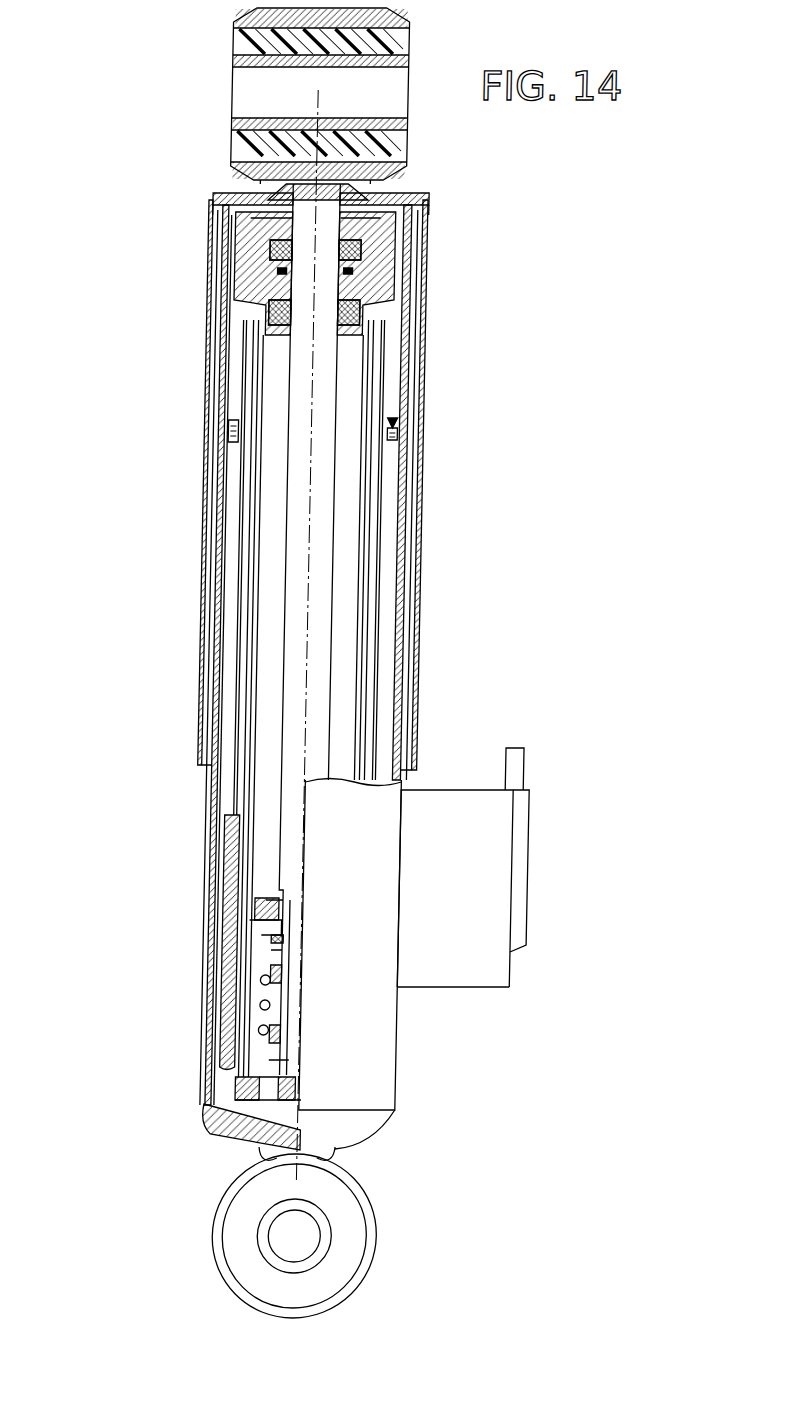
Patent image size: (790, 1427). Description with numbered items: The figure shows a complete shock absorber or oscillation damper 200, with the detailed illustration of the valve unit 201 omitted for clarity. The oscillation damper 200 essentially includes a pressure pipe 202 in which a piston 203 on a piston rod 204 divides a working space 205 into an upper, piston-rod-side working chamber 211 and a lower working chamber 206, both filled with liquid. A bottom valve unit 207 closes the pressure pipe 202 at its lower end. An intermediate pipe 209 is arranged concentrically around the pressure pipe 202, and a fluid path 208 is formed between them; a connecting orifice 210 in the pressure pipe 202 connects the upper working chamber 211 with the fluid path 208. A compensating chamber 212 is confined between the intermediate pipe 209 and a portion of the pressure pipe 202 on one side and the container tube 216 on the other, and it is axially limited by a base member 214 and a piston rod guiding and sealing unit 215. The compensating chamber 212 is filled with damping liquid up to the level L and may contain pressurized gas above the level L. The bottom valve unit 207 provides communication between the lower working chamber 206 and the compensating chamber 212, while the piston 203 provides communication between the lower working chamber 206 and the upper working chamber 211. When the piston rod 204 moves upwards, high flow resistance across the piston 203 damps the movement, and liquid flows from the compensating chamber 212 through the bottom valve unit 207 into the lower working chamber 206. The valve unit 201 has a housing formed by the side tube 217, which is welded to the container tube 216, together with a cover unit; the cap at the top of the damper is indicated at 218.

The oscillation damper 200 is at (174, 644).
The valve unit 201 is at (481, 788).
The pressure pipe 202 is at (387, 597).
The piston 203 is at (263, 985).
The piston rod 204 is at (340, 485).
The working space 205 is at (279, 458).
The lower working chamber 206 is at (266, 1055).
The bottom valve unit 207 is at (267, 1090).
The fluid path 208 is at (385, 630).
The intermediate pipe 209 is at (382, 678).
The connecting orifice 210 is at (390, 402).
The upper working chamber 211 is at (279, 558).
The compensating chamber 212 is at (401, 555).
The base member 214 is at (232, 1112).
The piston rod guiding and sealing unit 215 is at (394, 288).
The container tube 216 is at (412, 520).
The side tube 217 is at (496, 988).
The top cover 218 is at (216, 196).
The liquid level L is at (243, 420).